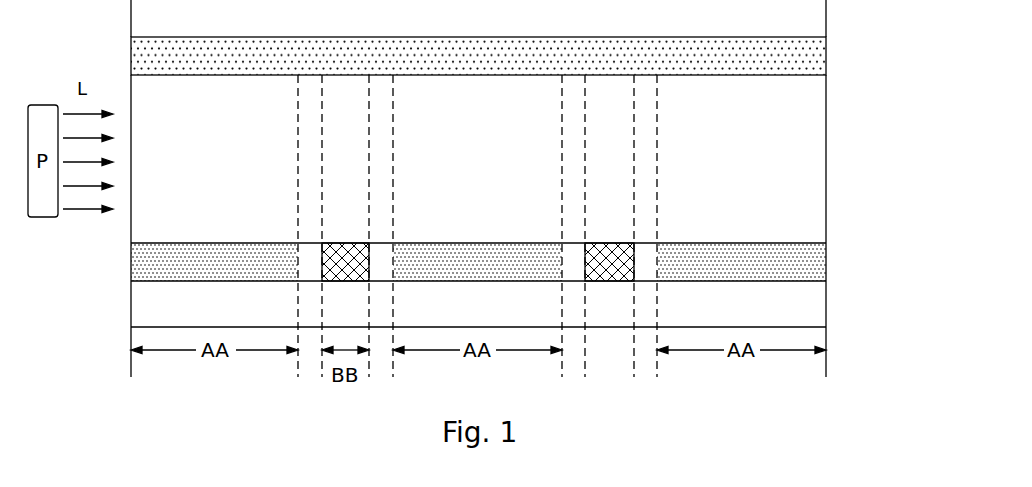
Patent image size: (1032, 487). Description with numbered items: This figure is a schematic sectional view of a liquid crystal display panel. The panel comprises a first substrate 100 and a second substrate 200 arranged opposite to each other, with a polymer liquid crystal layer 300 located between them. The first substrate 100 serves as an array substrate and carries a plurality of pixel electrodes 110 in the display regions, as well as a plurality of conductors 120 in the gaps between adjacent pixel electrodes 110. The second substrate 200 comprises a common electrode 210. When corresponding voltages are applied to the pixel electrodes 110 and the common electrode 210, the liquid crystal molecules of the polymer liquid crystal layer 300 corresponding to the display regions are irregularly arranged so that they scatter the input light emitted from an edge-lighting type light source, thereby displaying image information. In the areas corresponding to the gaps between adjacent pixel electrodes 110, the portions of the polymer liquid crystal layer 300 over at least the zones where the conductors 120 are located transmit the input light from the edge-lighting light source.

The first substrate 100 is at (777, 303).
The pixel electrodes 110 is at (793, 267).
The conductors 120 is at (609, 273).
The second substrate 200 is at (778, 14).
The common electrode 210 is at (797, 57).
The polymer liquid crystal layer 300 is at (799, 153).